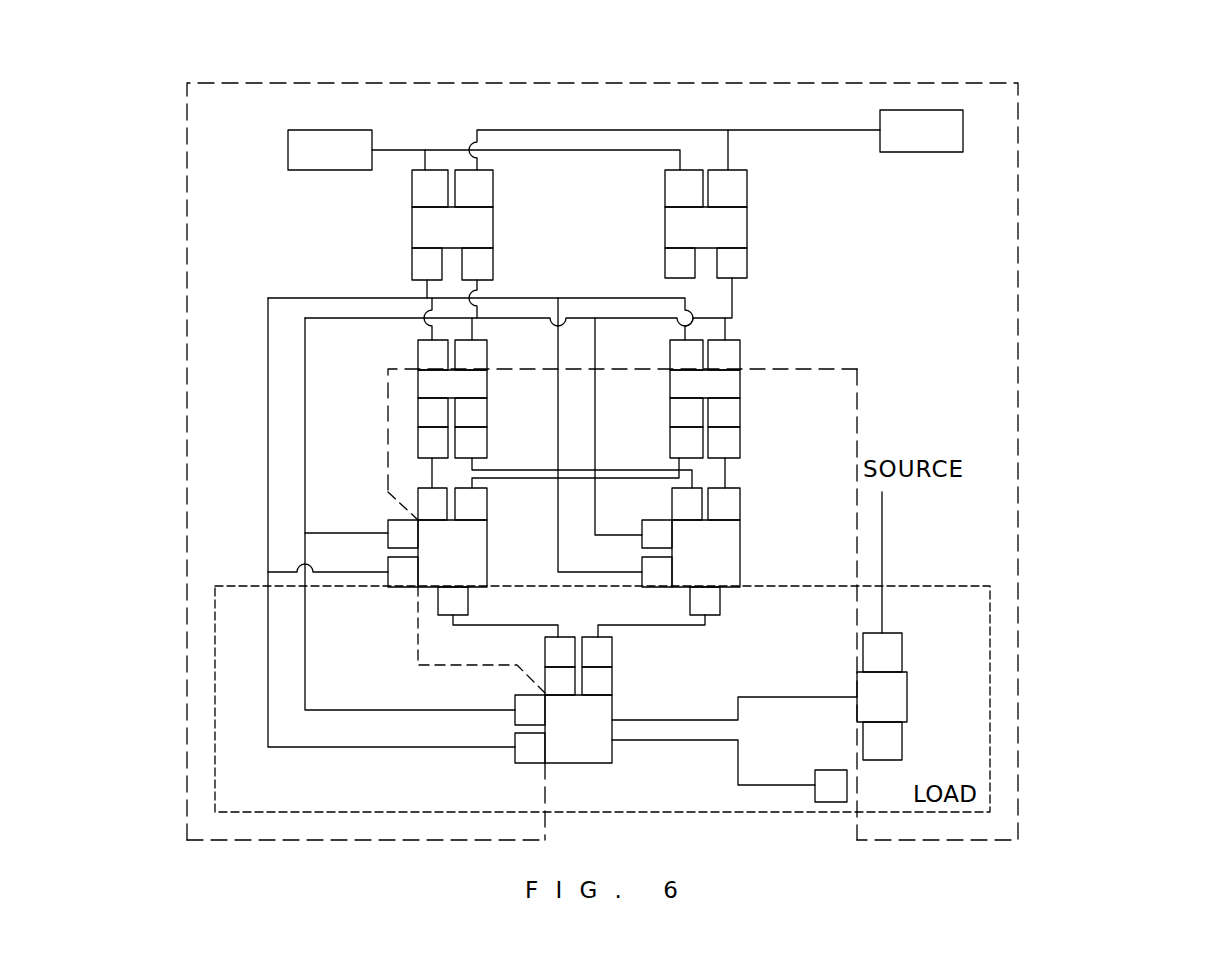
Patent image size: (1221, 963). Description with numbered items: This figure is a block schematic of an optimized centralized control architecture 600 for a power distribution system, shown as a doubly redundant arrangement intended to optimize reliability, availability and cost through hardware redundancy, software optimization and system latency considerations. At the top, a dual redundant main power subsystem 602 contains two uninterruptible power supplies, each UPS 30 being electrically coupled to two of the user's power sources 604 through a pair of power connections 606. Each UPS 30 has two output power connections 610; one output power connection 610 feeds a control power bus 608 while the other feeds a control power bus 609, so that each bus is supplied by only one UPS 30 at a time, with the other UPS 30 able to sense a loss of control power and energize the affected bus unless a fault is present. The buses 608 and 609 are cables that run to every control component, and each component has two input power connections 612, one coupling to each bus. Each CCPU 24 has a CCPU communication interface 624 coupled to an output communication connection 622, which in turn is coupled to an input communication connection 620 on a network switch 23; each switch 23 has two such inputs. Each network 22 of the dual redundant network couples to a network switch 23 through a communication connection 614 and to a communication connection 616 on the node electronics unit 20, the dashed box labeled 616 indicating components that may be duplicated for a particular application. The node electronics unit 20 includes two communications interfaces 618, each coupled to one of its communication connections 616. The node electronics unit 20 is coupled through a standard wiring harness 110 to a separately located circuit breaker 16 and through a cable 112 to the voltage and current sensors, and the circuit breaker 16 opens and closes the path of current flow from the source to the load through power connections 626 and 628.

The optimized centralized control architecture 600 is at (1090, 94).
The dual redundant main power subsystem 602 is at (918, 83).
The user's power source 604 is at (330, 170).
The power connection 606 is at (412, 182).
The uninterruptible power supply 30 is at (493, 232).
The output power connection 610 is at (412, 270).
The control power bus 608 is at (640, 298).
The control power bus 609 is at (664, 326).
The input power connection 612 is at (685, 340).
The central control processing unit 24 is at (487, 395).
The CCPU communication interface 624 is at (418, 412).
The output communication connection 622 is at (418, 445).
The input communication connection 620 is at (447, 513).
The network switch 23 is at (487, 552).
The communication connection 614 is at (468, 604).
The network 22 is at (545, 625).
The communication connection 616 is at (915, 588).
The communications interface 618 is at (575, 690).
The node electronics unit 20 is at (592, 763).
The standard wiring harness 110 is at (757, 697).
The cable 112 is at (750, 785).
The power connection 626 is at (902, 650).
The circuit breaker 16 is at (907, 696).
The power connection 628 is at (902, 740).